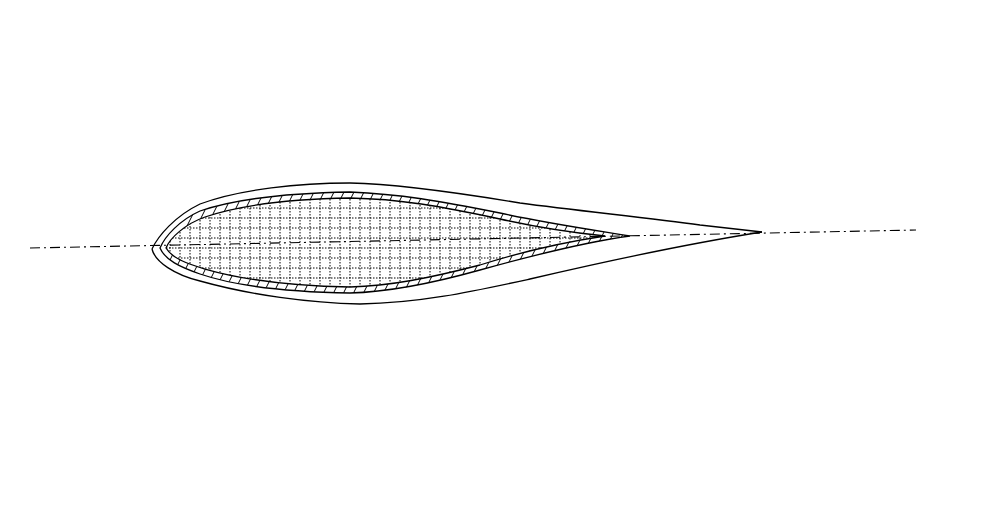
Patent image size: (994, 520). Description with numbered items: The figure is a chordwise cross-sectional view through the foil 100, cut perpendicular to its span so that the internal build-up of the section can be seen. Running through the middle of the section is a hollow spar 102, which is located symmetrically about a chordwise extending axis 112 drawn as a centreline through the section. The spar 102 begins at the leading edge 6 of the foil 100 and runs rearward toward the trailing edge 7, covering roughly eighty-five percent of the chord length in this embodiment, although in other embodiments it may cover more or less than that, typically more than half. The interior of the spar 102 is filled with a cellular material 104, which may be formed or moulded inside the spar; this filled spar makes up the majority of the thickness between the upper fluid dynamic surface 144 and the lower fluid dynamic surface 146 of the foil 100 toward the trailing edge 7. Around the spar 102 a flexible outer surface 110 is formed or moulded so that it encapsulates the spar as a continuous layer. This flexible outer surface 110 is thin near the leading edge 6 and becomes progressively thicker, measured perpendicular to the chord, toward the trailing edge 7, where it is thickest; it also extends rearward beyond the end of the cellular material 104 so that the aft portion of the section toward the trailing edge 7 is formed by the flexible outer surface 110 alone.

The foil 100 is at (332, 110).
The spar 102 is at (480, 215).
The cellular material 104 is at (315, 217).
The flexible outer surface 110 is at (457, 247).
The chordwise extending axis 112 is at (830, 230).
The upper fluid dynamic surface 144 is at (243, 192).
The lower fluid dynamic surface 146 is at (338, 303).
The leading edge 6 is at (152, 250).
The trailing edge 7 is at (762, 233).